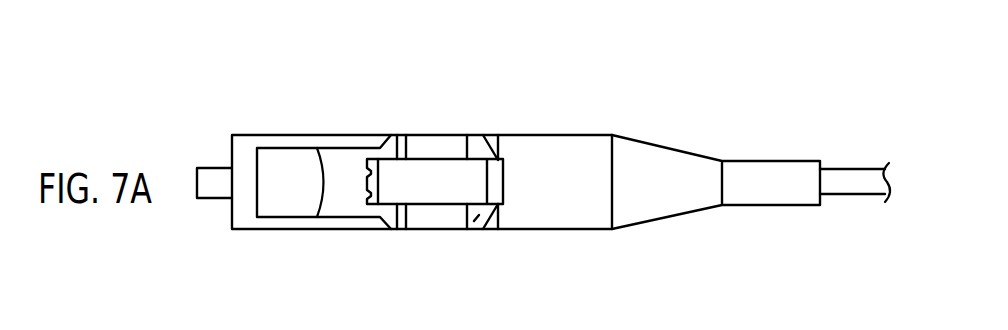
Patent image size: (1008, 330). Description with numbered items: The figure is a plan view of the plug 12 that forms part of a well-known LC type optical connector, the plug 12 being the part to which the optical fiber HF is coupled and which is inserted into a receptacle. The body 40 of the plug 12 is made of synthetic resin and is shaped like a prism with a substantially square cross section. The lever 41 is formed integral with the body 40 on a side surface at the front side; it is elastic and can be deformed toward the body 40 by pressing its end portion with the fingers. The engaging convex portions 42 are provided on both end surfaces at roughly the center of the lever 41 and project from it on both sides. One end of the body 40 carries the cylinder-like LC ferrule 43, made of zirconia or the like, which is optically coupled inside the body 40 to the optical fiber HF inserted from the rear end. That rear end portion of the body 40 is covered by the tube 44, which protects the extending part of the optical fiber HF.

The plug 12 is at (482, 58).
The body 40 is at (280, 135).
The lever 41 is at (427, 175).
The engaging convex portions 42 is at (385, 147).
The LC ferrule 43 is at (212, 180).
The tube 44 is at (668, 162).
The optical fiber HF is at (847, 178).